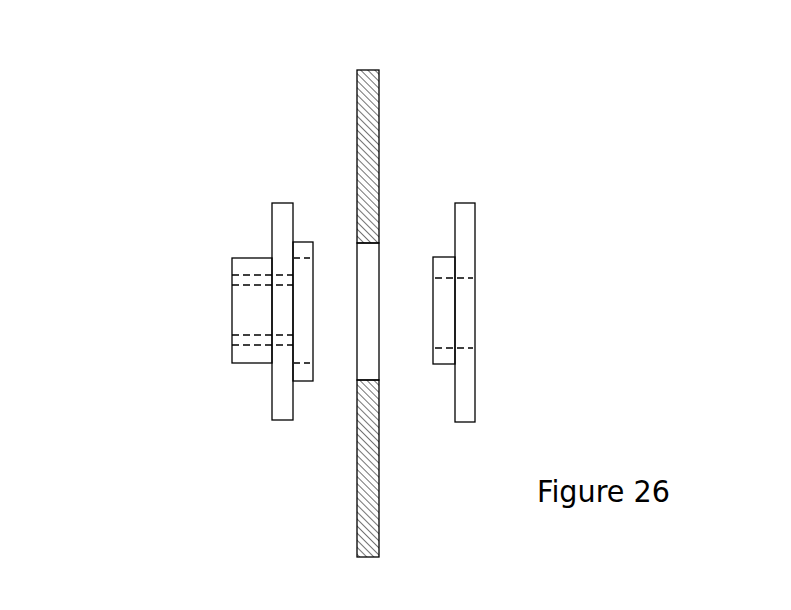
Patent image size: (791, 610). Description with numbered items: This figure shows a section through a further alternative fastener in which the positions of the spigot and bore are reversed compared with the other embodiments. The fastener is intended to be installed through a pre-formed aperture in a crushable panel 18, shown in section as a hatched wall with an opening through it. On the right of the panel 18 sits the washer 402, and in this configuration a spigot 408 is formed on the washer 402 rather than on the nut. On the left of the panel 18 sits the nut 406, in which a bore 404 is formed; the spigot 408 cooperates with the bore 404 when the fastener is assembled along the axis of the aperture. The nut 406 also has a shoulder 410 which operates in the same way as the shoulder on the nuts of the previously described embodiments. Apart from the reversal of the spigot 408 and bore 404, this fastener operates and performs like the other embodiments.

The crushable panel 18 is at (377, 90).
The washer 402 is at (501, 326).
The bore 404 is at (323, 313).
The nut 406 is at (172, 351).
The spigot 408 is at (442, 357).
The shoulder 410 is at (312, 377).